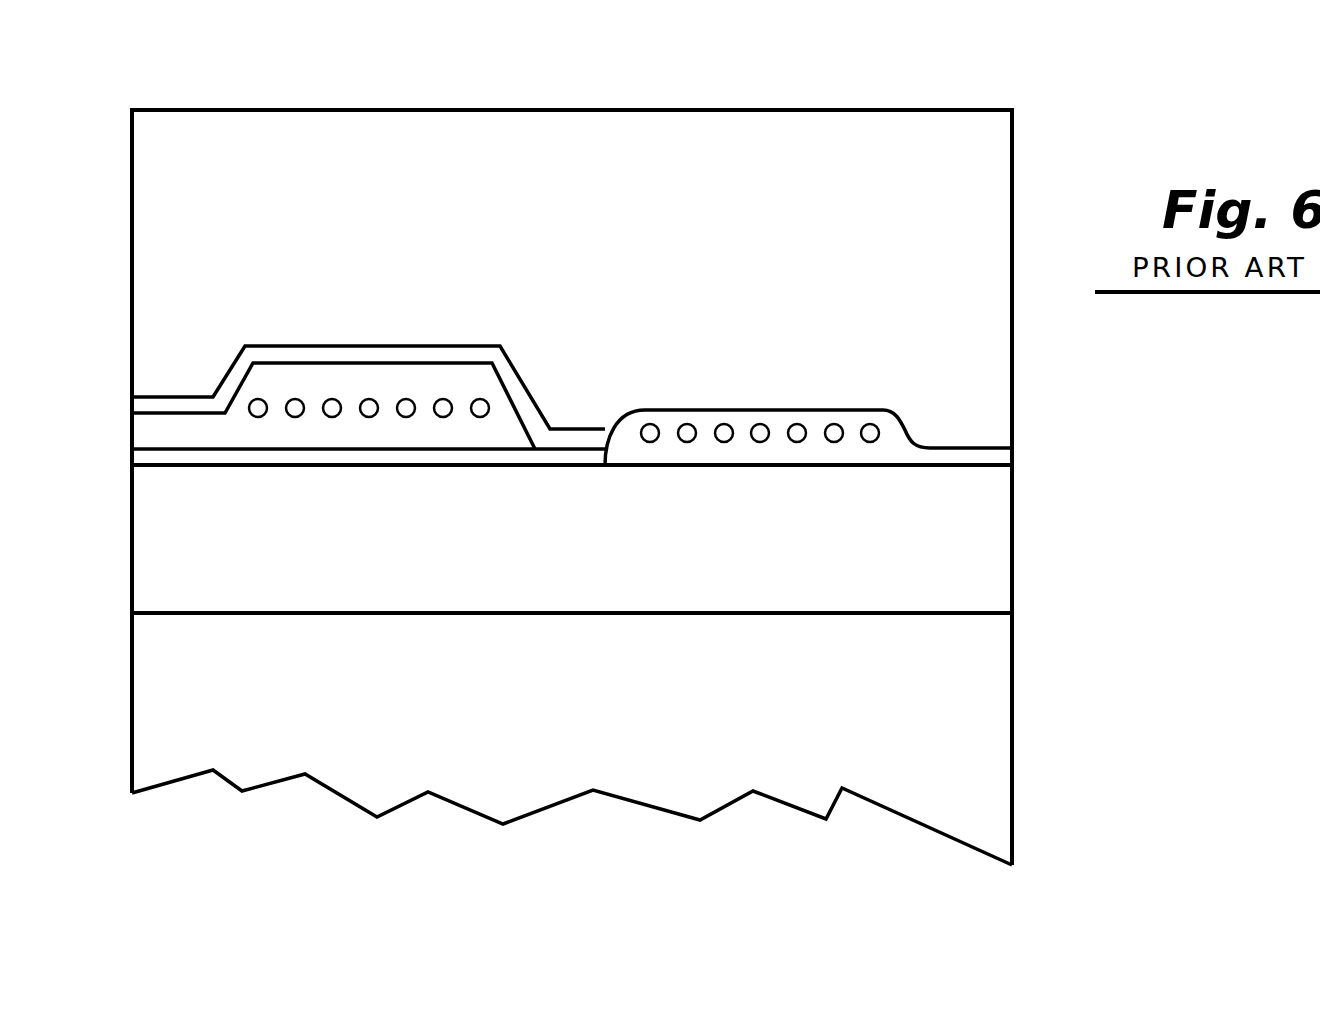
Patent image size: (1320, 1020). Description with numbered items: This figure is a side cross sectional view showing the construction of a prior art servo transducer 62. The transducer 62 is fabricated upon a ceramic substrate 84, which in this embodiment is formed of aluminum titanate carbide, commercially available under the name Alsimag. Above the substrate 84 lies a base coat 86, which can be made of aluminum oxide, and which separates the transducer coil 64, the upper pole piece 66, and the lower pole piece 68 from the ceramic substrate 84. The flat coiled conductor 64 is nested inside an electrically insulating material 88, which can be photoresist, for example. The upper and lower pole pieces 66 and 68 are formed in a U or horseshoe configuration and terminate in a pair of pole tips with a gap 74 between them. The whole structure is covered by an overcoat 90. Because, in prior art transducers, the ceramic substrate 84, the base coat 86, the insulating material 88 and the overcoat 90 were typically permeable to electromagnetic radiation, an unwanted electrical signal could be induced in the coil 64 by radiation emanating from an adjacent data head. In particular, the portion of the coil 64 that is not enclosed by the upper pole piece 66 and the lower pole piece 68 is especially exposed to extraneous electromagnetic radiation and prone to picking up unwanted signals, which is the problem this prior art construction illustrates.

The servo transducer 62 is at (236, 92).
The overcoat 90 is at (858, 160).
The upper pole piece 66 is at (262, 355).
The gap 74 is at (150, 431).
The lower pole piece 68 is at (240, 449).
The electrically insulating material 88 is at (867, 418).
The flat coiled conductor 64 is at (717, 418).
The base coat 86 is at (973, 532).
The ceramic substrate 84 is at (965, 693).